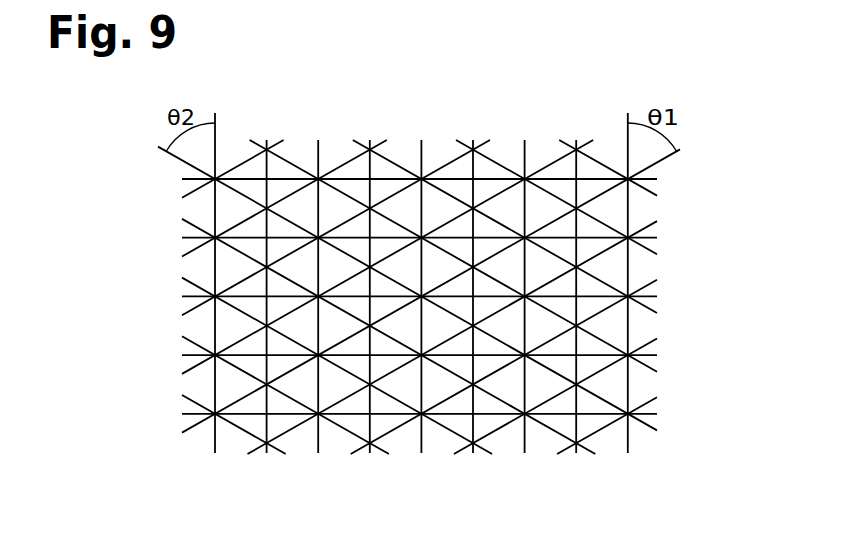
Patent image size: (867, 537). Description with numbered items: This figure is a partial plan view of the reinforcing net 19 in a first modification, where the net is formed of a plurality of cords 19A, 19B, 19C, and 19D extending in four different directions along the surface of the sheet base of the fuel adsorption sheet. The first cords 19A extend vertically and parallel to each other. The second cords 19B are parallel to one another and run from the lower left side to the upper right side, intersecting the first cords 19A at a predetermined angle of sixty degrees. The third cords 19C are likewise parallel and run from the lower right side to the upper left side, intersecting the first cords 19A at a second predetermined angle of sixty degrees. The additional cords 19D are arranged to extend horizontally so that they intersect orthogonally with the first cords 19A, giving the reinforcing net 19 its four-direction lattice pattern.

The reinforcing net 19 is at (319, 150).
The first cords 19A is at (470, 168).
The second cords 19B is at (647, 288).
The third cords 19C is at (200, 282).
The cords 19D is at (200, 400).